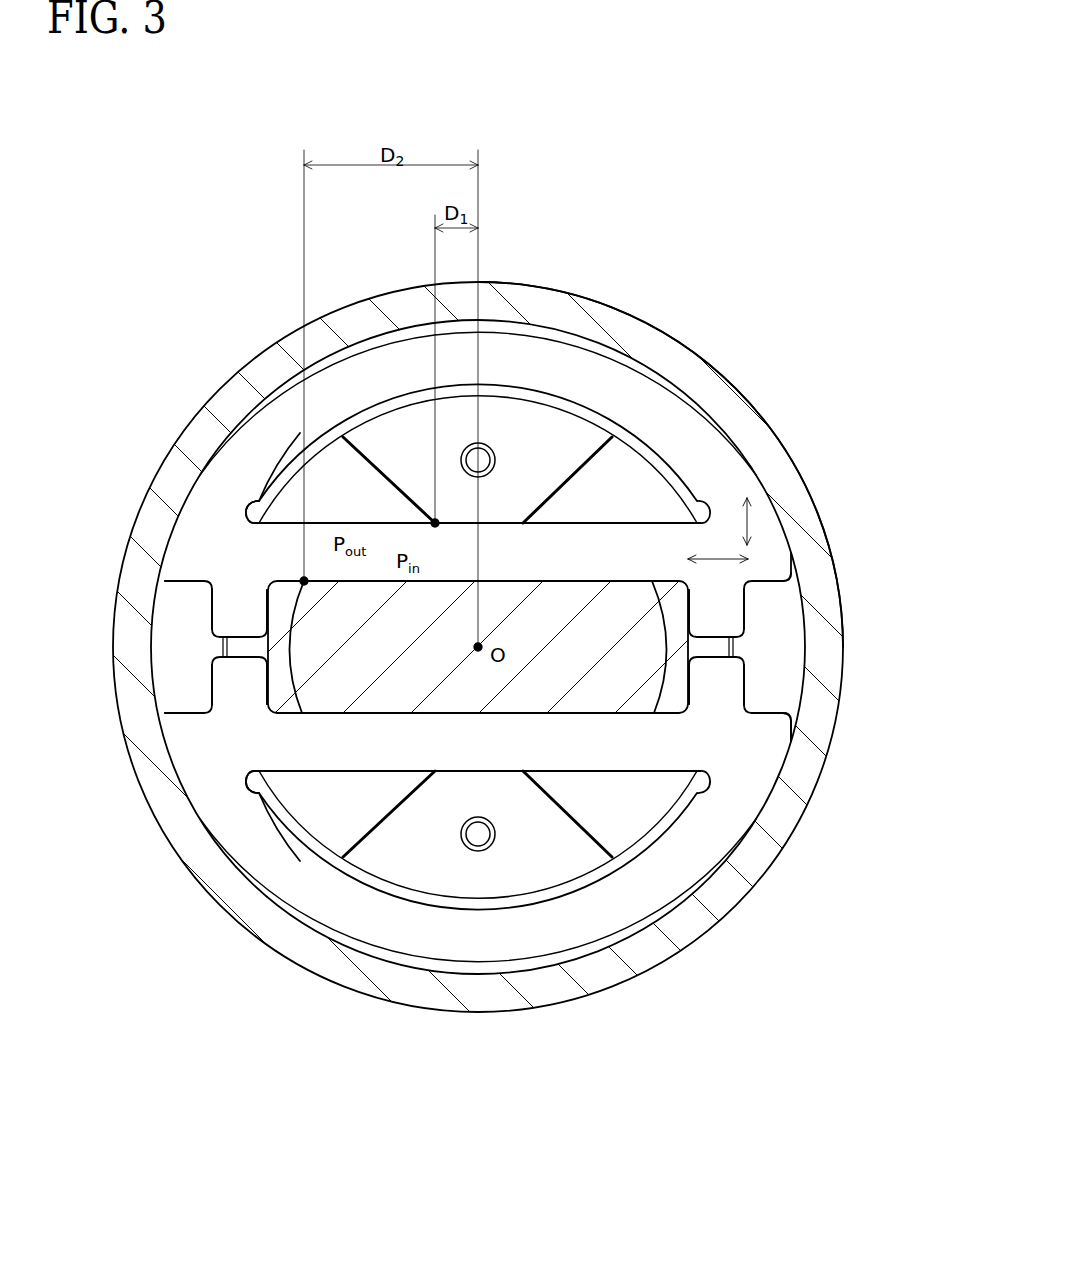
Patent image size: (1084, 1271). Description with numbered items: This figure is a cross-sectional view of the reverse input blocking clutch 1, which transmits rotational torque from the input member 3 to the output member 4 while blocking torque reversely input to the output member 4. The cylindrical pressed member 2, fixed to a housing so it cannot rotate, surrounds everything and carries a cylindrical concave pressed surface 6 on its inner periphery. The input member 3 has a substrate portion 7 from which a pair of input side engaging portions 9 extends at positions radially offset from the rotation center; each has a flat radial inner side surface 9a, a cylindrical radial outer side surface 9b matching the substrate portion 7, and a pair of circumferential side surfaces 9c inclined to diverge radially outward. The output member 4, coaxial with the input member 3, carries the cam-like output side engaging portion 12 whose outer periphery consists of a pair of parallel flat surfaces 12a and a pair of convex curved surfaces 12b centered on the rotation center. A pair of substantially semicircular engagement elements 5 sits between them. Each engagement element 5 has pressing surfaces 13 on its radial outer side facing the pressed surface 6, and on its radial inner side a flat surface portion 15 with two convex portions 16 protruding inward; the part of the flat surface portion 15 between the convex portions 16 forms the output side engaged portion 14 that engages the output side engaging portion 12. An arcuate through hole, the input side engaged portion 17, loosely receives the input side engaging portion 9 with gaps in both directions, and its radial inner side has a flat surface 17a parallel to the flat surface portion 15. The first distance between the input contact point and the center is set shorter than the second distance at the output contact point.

The reverse input blocking clutch 1 is at (698, 278).
The pressed member 2 is at (722, 392).
The input member 3 is at (730, 910).
The output member 4 is at (800, 736).
The engagement element 5 is at (668, 333).
The pressed surface 6 is at (538, 428).
The substrate portion 7 is at (662, 838).
The input side engaging portion 9 is at (560, 476).
The radial inner side surface 9a is at (582, 519).
The radial outer side surface 9b is at (492, 398).
The circumferential side surface 9c is at (372, 478).
The output side engaging portion 12 is at (214, 700).
The flat surface 12a is at (768, 505).
The convex curved surface 12b is at (745, 647).
The pressing surface 13 is at (797, 550).
The output side engaged portion 14 is at (760, 586).
The flat surface portion 15 is at (718, 422).
The convex portion 16 is at (748, 605).
The input side engaged portion 17 is at (358, 465).
The flat surface 17a is at (282, 518).